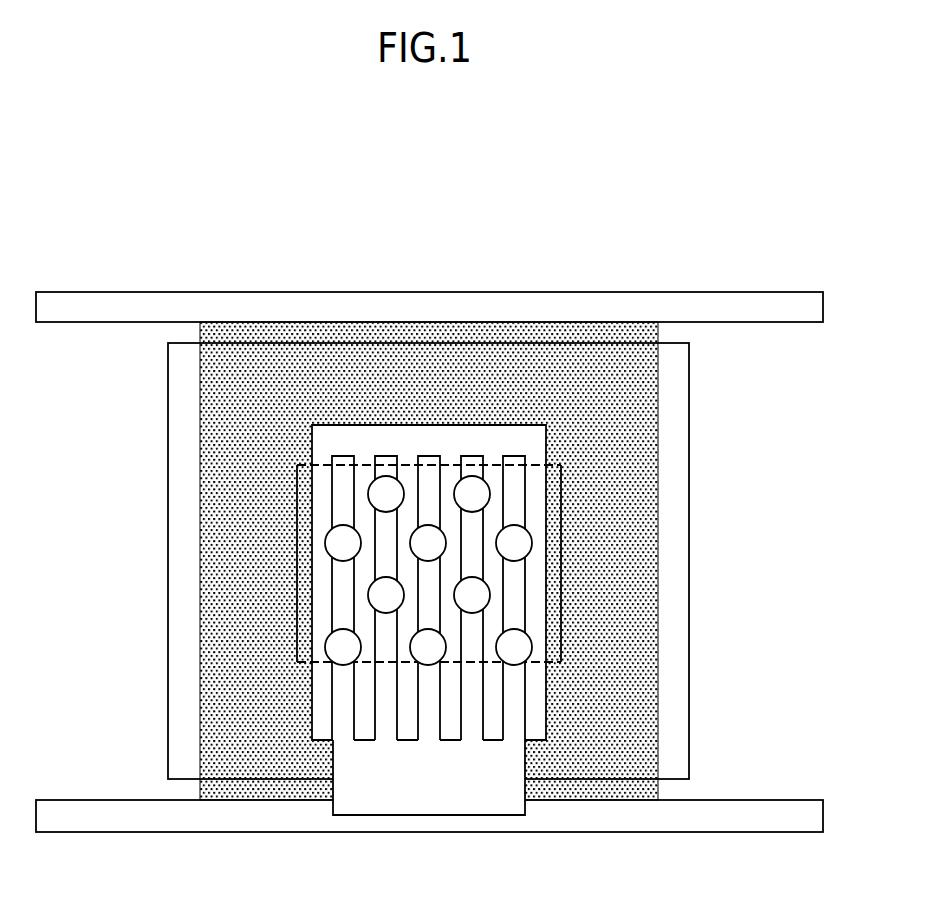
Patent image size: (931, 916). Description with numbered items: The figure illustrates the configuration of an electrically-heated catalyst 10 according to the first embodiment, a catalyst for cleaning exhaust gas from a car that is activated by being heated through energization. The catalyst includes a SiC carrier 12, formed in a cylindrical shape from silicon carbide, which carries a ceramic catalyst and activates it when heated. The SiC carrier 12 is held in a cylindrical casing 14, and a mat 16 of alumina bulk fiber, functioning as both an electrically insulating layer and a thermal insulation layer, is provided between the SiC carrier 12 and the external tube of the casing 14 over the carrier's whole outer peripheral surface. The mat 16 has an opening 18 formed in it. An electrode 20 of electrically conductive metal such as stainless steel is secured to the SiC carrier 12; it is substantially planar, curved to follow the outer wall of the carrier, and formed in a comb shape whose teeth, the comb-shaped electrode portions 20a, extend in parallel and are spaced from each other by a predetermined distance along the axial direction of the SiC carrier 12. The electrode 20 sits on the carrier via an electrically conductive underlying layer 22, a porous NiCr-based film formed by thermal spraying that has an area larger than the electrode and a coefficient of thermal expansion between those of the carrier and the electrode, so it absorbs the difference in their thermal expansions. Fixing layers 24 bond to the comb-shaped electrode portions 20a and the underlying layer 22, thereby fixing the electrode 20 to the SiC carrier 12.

The electrically-heated catalyst 10 is at (213, 220).
The SiC carrier 12 is at (690, 395).
The casing 14 is at (725, 292).
The mat 16 is at (658, 332).
The opening 18 is at (323, 719).
The electrode 20 is at (433, 803).
The comb-shaped electrode portions 20a is at (383, 457).
The underlying layer 22 is at (297, 557).
The fixing layers 24 is at (487, 478).